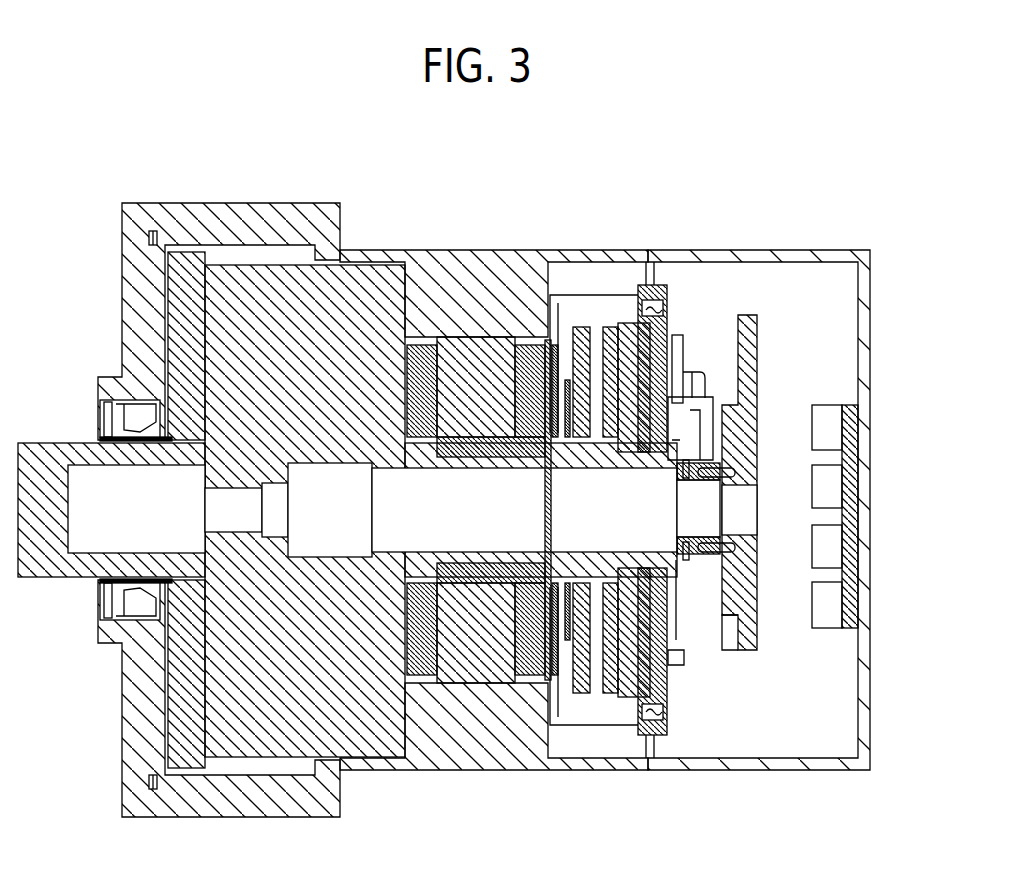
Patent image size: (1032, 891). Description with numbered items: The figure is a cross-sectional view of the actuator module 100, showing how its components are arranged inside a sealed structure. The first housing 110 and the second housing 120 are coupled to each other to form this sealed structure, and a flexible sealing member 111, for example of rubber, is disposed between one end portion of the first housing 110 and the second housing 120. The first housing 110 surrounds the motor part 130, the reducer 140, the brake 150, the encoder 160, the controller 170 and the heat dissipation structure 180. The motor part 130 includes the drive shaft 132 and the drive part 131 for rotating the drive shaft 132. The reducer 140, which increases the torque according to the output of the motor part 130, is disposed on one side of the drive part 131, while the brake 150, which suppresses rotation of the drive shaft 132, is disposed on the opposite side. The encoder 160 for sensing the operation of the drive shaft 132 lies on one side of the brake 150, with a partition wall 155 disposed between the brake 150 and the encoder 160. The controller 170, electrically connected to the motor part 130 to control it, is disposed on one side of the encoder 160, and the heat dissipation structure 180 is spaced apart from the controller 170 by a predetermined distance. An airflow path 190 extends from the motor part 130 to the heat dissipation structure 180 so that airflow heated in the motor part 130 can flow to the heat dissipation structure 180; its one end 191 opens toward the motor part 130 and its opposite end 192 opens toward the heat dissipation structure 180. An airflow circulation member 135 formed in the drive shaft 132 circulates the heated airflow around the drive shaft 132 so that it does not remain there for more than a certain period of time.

The actuator module 100 is at (125, 158).
The first housing 110 is at (406, 250).
The sealing member 111 is at (158, 230).
The second housing 120 is at (124, 256).
The motor part 130 is at (476, 408).
The drive part 131 is at (470, 355).
The drive shaft 132 is at (500, 440).
The airflow circulation member 135 is at (592, 300).
The reducer 140 is at (352, 700).
The brake 150 is at (665, 672).
The partition wall 155 is at (670, 360).
The encoder 160 is at (702, 410).
The controller 170 is at (745, 623).
The heat dissipation structure 180 is at (848, 476).
The airflow path 190 is at (648, 295).
The one end of the airflow path 191 is at (560, 345).
The opposite end of the airflow path 192 is at (662, 318).